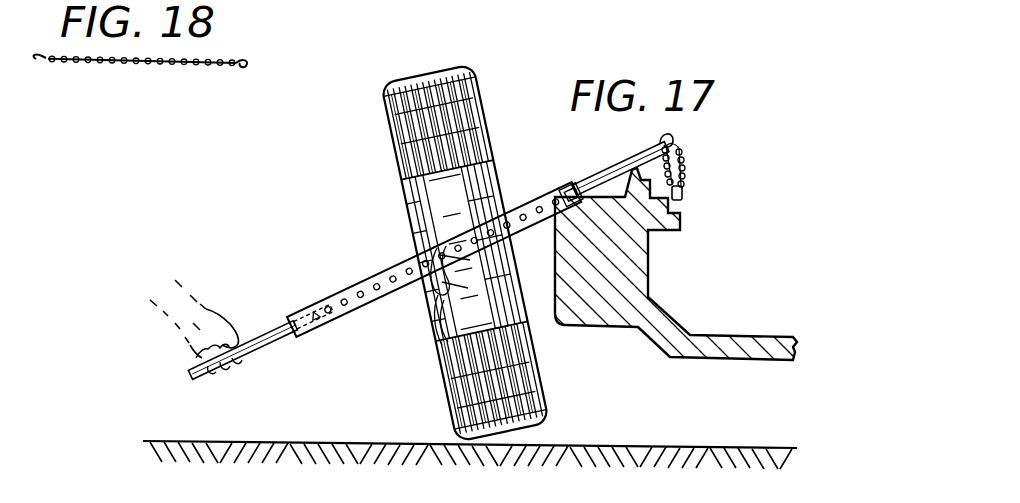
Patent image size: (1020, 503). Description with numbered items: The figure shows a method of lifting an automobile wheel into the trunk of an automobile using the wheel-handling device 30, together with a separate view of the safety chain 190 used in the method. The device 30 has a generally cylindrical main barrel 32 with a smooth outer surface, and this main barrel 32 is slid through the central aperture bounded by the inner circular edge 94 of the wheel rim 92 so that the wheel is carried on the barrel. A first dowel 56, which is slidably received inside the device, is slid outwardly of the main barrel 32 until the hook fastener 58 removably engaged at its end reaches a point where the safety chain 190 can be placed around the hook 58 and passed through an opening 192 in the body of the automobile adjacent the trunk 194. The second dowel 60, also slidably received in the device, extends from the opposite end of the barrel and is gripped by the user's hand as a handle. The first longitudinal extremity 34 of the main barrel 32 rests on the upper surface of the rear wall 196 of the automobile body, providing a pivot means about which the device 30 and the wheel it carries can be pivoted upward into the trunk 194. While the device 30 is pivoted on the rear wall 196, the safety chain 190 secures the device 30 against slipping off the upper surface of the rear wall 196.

In FIG. 17, the device 30 is at (329, 334).
In FIG. 17, the main barrel 32 is at (342, 296).
In FIG. 17, the first longitudinal extremity 34 is at (556, 182).
In FIG. 17, the first dowel 56 is at (607, 178).
In FIG. 17, the hook fastener 58 is at (675, 138).
In FIG. 17, the second dowel 60 is at (272, 330).
In FIG. 17, the wheel rim 92 is at (440, 344).
In FIG. 17, the inner circular edge 94 is at (428, 288).
In FIG. 18, the safety chain 190 is at (131, 70).
In FIG. 17, the safety chain 190 is at (686, 160).
In FIG. 17, the opening 192 is at (684, 193).
In FIG. 17, the trunk 194 is at (742, 292).
In FIG. 17, the rear wall 196 is at (597, 285).